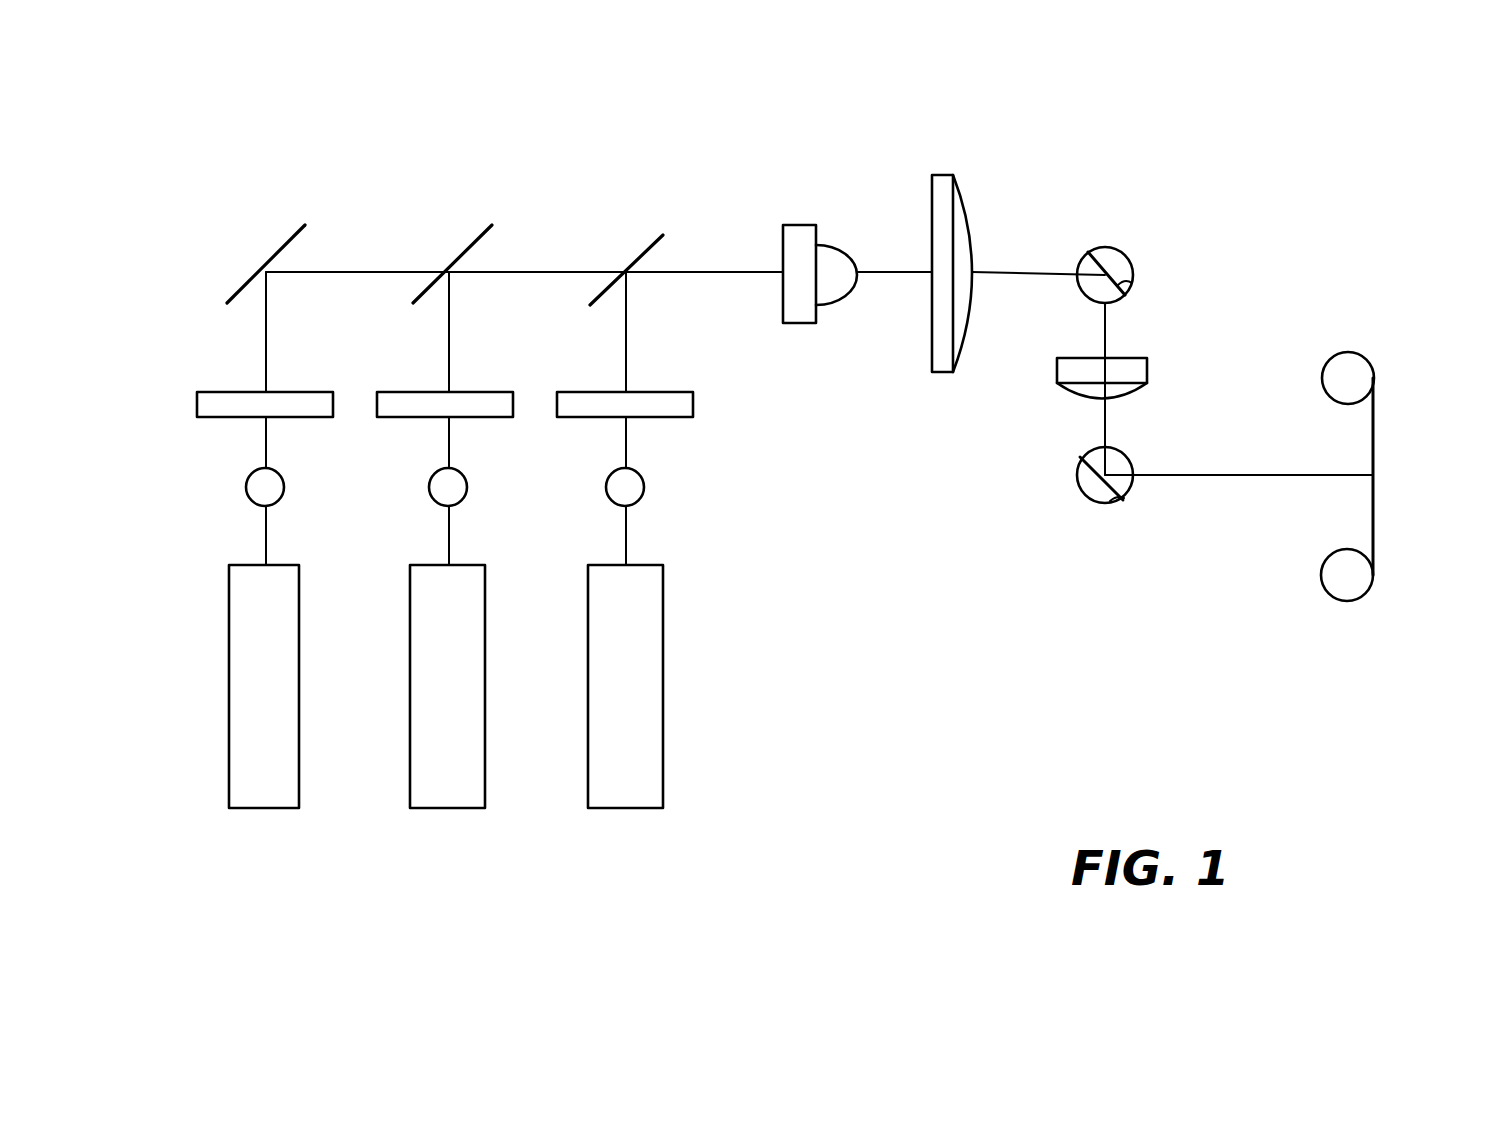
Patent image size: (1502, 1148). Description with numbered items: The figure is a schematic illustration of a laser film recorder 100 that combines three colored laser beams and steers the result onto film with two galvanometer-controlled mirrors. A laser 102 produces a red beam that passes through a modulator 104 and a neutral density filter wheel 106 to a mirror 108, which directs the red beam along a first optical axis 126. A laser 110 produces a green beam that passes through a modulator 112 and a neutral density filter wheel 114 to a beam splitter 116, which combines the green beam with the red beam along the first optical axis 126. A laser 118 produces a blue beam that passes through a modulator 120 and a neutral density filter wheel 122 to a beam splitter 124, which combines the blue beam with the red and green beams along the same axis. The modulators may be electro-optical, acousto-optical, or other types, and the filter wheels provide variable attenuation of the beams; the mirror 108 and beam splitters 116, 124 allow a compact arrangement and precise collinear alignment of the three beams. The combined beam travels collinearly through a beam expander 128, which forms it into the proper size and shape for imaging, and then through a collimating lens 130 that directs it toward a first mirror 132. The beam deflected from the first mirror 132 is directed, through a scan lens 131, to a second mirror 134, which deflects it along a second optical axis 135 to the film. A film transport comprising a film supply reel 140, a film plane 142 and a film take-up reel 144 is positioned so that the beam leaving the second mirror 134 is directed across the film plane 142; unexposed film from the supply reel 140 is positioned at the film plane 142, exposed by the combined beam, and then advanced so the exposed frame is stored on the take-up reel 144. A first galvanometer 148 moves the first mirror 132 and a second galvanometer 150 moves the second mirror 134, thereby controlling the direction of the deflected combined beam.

The laser film recorder 100 is at (826, 758).
The laser 102 is at (285, 800).
The modulator 104 is at (279, 500).
The neutral density filter wheel 106 is at (313, 400).
The mirror 108 is at (291, 237).
The laser 110 is at (468, 800).
The modulator 112 is at (462, 498).
The neutral density filter wheel 114 is at (497, 400).
The beam splitter 116 is at (476, 240).
The laser 118 is at (648, 800).
The modulator 120 is at (640, 497).
The neutral density filter wheel 122 is at (685, 402).
The beam splitter 124 is at (640, 240).
The first optical axis 126 is at (713, 273).
The beam expander 128 is at (807, 233).
The collimating lens 130 is at (965, 228).
The scan lens 131 is at (1147, 372).
The first mirror 132 is at (1137, 278).
The second mirror 134 is at (1105, 503).
The second optical axis 135 is at (1258, 478).
The film supply reel 140 is at (1328, 595).
The film plane 142 is at (1375, 447).
The film take-up reel 144 is at (1360, 355).
The first galvanometer 148 is at (1110, 247).
The second galvanometer 150 is at (1067, 483).